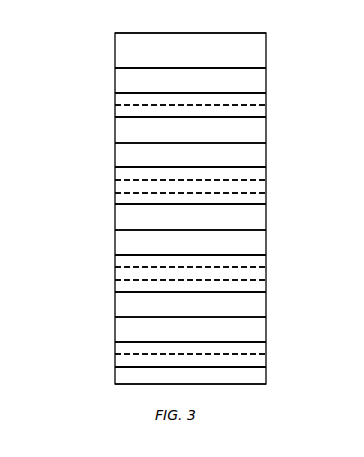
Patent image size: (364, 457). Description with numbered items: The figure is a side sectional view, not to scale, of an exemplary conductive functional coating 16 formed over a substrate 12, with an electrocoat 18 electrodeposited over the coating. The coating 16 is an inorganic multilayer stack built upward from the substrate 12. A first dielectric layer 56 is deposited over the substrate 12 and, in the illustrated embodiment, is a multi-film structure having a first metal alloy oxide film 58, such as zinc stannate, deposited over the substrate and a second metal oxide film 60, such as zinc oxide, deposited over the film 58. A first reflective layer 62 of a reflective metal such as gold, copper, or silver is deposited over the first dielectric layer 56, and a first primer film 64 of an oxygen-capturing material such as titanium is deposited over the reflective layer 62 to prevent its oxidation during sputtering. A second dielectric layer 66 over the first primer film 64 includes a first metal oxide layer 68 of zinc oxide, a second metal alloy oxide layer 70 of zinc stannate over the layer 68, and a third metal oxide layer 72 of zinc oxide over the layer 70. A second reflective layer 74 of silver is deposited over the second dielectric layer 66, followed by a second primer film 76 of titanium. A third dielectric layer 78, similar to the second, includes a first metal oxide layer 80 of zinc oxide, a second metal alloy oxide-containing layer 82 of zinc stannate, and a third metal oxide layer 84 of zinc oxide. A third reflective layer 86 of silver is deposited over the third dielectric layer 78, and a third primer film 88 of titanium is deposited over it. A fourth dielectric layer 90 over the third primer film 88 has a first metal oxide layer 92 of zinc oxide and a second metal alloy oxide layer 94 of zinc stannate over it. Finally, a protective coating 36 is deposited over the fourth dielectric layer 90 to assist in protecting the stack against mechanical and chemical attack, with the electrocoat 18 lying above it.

The substrate 12 is at (260, 380).
The conductive functional coating 16 is at (115, 68).
The electrocoat 18 is at (260, 53).
The protective coating 36 is at (260, 86).
The first dielectric layer 56 is at (268, 342).
The first metal alloy oxide film 58 is at (124, 360).
The second metal oxide film 60 is at (124, 348).
The first reflective layer 62 is at (260, 332).
The first primer film 64 is at (260, 308).
The second dielectric layer 66 is at (268, 255).
The first metal oxide layer 68 is at (124, 286).
The second metal alloy oxide layer 70 is at (124, 274).
The third metal oxide layer 72 is at (124, 261).
The second reflective layer 74 is at (260, 247).
The second primer film 76 is at (260, 226).
The third dielectric layer 78 is at (268, 167).
The first metal oxide layer 80 is at (124, 199).
The second metal alloy oxide-containing layer 82 is at (124, 186).
The third metal oxide layer 84 is at (124, 173).
The third reflective layer 86 is at (260, 157).
The third primer film 88 is at (260, 134).
The fourth dielectric layer 90 is at (268, 93).
The first metal oxide layer 92 is at (124, 112).
The second metal alloy oxide layer 94 is at (124, 104).